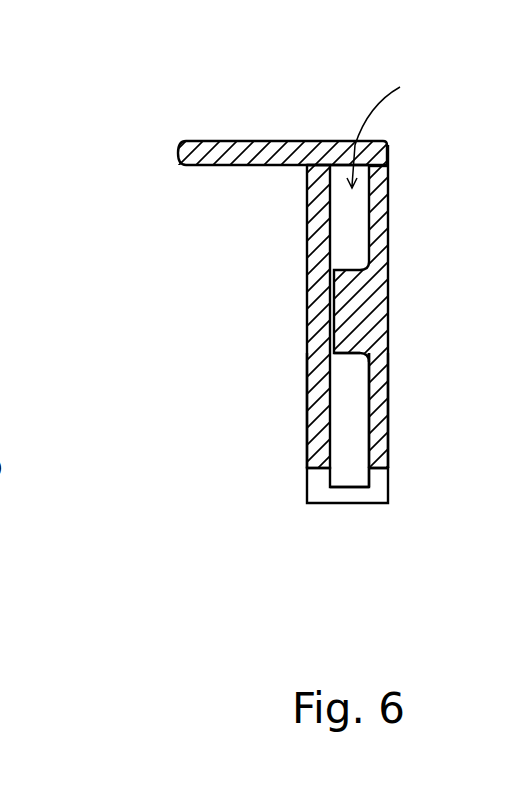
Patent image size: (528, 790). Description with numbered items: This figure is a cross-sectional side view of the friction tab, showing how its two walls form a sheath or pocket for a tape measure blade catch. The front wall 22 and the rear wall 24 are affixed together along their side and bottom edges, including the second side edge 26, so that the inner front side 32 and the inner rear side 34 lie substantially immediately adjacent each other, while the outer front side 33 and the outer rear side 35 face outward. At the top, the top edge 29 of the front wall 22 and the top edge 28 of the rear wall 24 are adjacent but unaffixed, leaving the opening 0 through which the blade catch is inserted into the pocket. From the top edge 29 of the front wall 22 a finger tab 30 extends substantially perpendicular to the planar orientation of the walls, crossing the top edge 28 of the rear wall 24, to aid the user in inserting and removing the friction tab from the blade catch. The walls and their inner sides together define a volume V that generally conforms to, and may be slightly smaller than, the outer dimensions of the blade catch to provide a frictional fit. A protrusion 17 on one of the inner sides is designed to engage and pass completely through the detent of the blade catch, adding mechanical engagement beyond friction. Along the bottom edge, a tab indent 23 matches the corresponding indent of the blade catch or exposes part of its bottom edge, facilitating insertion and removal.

The finger tab 30 is at (233, 147).
The opening 0 is at (389, 123).
The top edge of the rear wall 28 is at (312, 167).
The top edge of the front wall 29 is at (386, 161).
The rear wall 24 is at (316, 233).
The front wall 22 is at (376, 235).
The volume V is at (345, 238).
The protrusion 17 is at (355, 313).
The inner rear side 34 is at (348, 373).
The outer rear side 35 is at (308, 425).
The outer front side 33 is at (372, 394).
The inner front side 32 is at (375, 405).
The tab indent 23 is at (316, 491).
The second side edge 26 is at (350, 467).